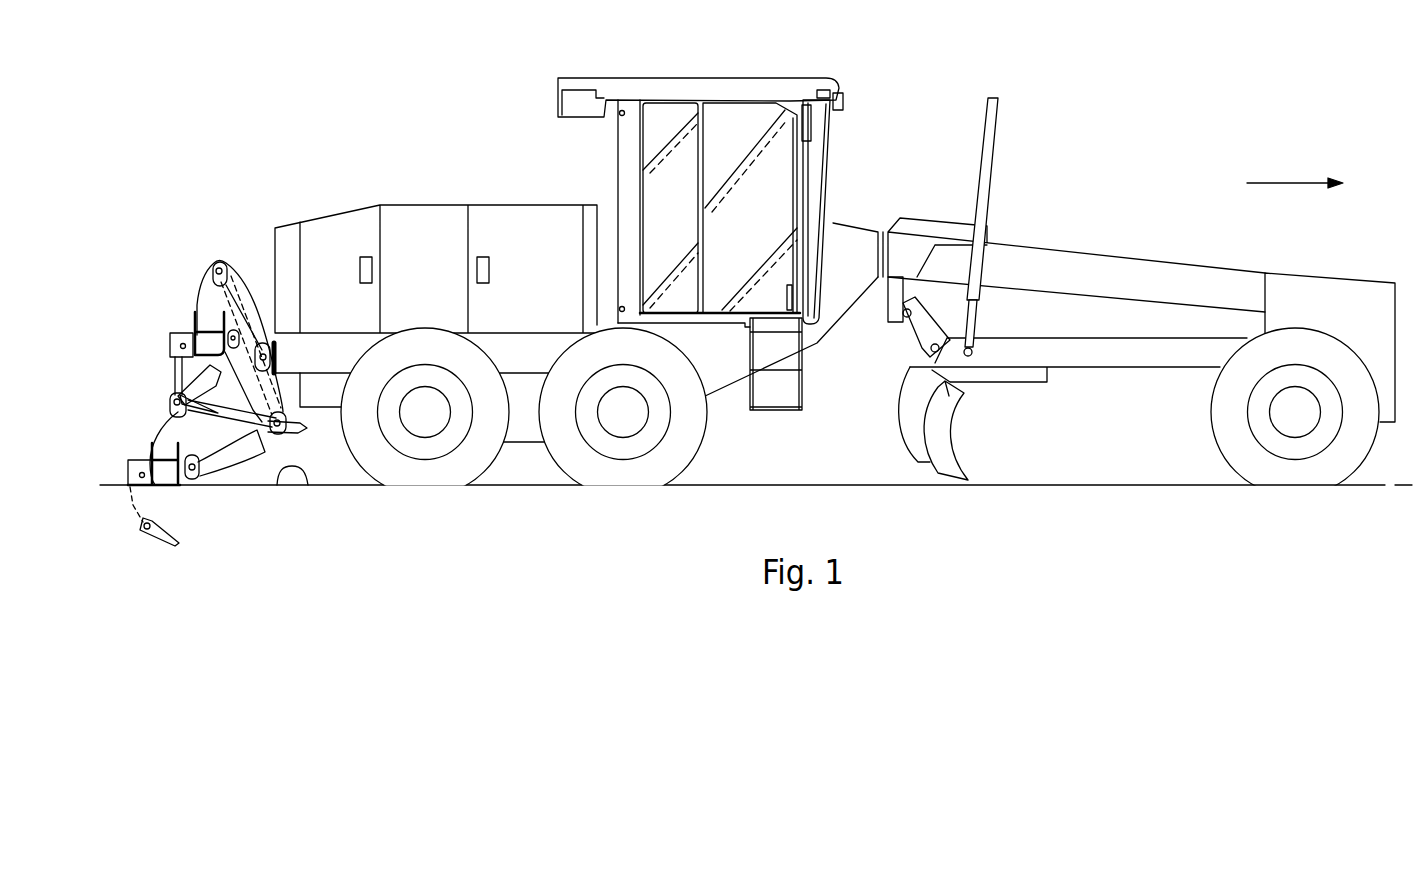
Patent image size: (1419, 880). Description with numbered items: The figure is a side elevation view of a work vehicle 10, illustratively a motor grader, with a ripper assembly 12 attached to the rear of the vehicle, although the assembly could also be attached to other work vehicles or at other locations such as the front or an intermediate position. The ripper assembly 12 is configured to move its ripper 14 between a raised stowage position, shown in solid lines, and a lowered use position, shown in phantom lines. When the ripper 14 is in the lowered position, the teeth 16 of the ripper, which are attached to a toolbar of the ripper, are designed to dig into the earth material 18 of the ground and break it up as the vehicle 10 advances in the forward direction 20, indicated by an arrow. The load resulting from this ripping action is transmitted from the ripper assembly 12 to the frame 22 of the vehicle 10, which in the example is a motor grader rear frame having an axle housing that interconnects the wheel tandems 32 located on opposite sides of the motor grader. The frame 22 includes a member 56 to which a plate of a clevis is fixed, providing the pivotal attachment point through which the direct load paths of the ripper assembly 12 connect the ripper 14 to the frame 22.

The work vehicle 10 is at (1107, 86).
The ripper assembly 12 is at (215, 222).
The ripper 14 is at (160, 313).
The teeth 16 is at (177, 377).
The earth material 18 is at (309, 487).
The forward direction 20 is at (1282, 183).
The frame 22 is at (328, 347).
The wheel tandems 32 is at (522, 435).
The member 56 is at (287, 347).